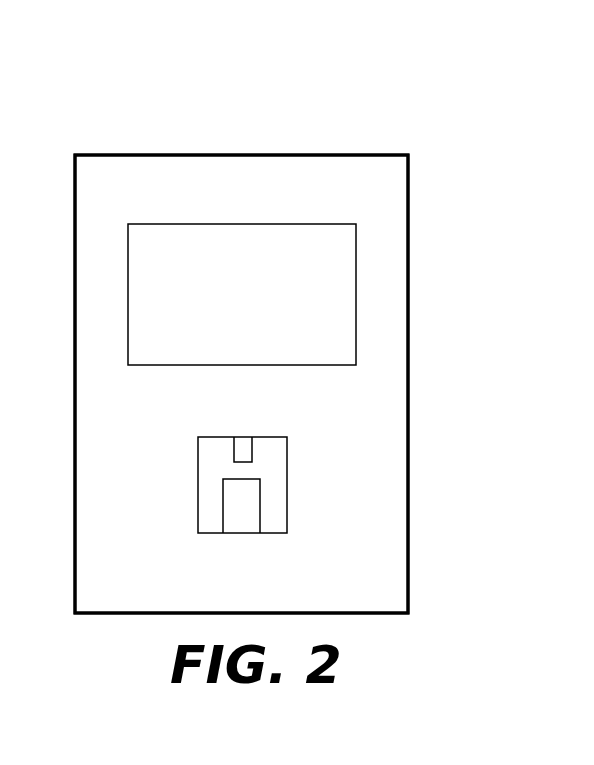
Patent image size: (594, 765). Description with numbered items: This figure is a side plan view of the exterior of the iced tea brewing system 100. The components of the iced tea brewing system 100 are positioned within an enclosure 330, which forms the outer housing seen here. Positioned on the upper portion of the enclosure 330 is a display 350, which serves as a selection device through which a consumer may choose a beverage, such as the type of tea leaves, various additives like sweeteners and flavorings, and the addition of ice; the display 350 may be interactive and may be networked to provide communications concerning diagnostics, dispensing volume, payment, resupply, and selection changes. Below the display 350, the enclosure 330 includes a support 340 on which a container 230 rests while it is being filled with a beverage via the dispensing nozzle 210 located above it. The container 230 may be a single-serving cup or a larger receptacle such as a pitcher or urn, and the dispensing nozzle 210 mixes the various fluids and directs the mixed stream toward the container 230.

The iced tea brewing system 100 is at (104, 92).
The enclosure 330 is at (411, 316).
The display 350 is at (333, 251).
The support 340 is at (216, 534).
The dispensing nozzle 210 is at (244, 445).
The container 230 is at (250, 507).